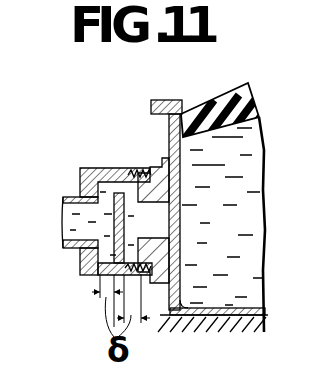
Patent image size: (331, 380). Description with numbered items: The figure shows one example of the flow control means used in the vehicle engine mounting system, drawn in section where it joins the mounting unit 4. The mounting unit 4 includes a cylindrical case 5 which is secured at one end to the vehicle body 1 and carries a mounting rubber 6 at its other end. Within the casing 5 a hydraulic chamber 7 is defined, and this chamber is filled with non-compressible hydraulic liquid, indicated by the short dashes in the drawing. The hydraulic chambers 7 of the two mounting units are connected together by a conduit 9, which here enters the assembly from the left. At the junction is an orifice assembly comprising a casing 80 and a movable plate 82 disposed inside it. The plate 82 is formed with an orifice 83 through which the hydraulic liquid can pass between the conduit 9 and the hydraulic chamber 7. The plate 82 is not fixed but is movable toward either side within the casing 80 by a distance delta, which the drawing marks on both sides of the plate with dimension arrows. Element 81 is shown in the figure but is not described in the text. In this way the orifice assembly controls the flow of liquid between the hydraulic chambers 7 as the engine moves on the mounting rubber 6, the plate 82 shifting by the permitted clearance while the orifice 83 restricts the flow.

The vehicle body 1 is at (222, 326).
The mounting unit 4 is at (272, 221).
The cylindrical case 5 is at (168, 132).
The mounting rubber 6 is at (205, 112).
The hydraulic chamber 7 is at (257, 162).
The conduit 9 is at (68, 196).
The casing 80 is at (88, 163).
The flange 81 is at (98, 277).
The movable plate 82 is at (110, 247).
The orifice 83 is at (114, 227).